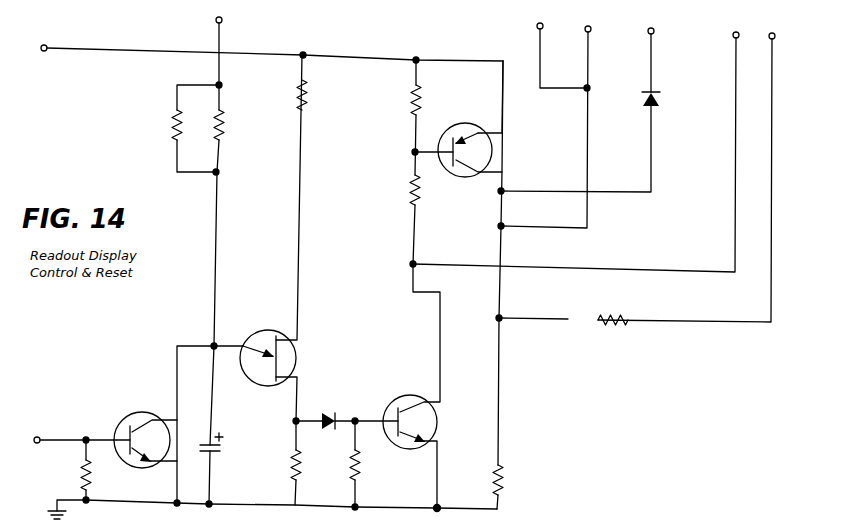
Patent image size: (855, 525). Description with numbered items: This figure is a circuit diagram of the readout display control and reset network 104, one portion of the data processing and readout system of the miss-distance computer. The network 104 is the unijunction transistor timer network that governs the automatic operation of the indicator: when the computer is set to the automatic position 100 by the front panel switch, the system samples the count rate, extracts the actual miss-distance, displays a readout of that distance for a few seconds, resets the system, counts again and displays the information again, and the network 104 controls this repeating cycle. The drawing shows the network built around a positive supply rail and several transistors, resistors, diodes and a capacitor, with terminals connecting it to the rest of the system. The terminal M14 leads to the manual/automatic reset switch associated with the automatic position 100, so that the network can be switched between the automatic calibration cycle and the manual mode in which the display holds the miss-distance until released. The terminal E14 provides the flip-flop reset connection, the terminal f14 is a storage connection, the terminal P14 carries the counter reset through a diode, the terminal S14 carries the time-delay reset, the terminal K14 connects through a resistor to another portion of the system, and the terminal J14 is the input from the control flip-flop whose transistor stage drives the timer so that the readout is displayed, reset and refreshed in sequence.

The readout display control and reset network 104 is at (412, 266).
The automatic position 100 is at (272, 57).
The terminal to manual/auto reset switch M14 is at (301, 49).
The flip-flop reset terminal to E13 E14 is at (531, 55).
The storage terminal (short to F9) f14 is at (573, 125).
The counter reset terminal P14 is at (603, 108).
The time-delay reset terminal to S11 S14 is at (591, 149).
The terminal to K11 K14 is at (652, 176).
The control flip-flop terminal to J13 J14 is at (74, 431).